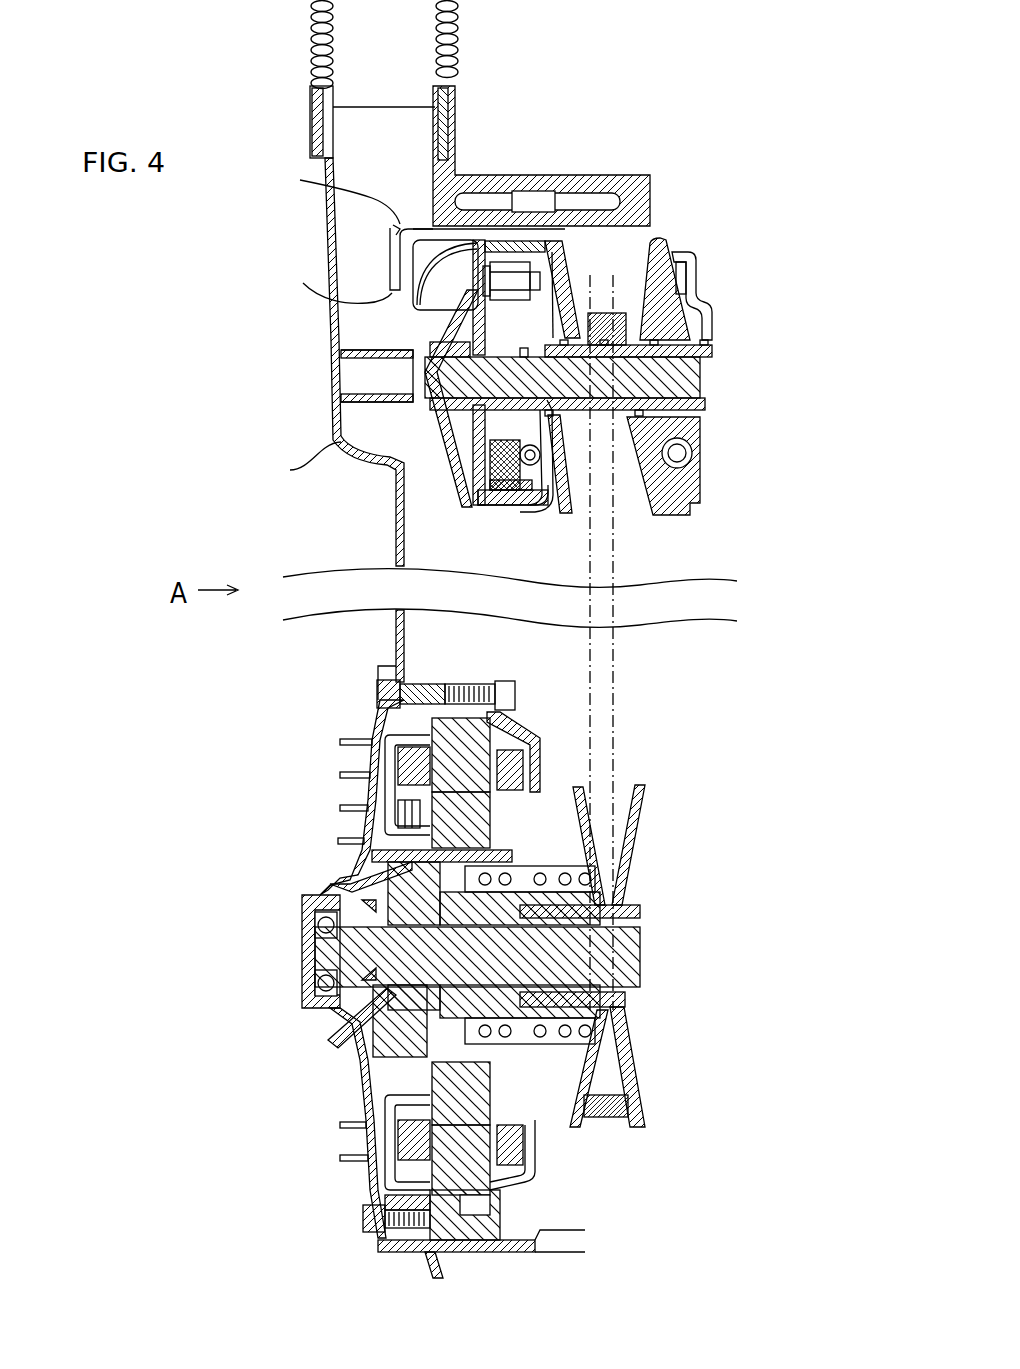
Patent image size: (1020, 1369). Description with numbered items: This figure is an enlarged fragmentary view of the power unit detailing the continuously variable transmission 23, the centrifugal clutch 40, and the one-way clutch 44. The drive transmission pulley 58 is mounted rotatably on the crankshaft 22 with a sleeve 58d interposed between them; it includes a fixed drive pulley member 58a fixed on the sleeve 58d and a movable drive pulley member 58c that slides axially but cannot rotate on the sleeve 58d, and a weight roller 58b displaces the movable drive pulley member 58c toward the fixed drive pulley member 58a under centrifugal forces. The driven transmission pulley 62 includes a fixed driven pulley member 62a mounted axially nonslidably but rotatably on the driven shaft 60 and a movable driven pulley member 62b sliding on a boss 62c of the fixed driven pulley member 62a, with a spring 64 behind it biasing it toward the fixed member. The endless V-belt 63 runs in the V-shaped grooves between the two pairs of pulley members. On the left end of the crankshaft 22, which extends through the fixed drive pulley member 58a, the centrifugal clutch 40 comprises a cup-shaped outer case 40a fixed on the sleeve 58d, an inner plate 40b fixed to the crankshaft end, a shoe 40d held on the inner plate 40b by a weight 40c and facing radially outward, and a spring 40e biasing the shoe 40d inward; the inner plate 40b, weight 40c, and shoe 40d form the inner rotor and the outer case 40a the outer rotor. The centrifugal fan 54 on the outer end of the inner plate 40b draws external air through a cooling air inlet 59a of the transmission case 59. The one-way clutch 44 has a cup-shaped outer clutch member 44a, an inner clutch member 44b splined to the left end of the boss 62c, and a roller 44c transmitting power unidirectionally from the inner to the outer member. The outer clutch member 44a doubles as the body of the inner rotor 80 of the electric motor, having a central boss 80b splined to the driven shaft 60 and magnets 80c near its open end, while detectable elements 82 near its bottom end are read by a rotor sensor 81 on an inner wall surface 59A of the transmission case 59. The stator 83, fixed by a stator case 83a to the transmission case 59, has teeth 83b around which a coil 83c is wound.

The centrifugal fan 54 is at (322, 184).
The transmission case 59 is at (330, 465).
The cooling air inlet 59a is at (390, 290).
The inner wall surface 59A is at (372, 735).
The centrifugal clutch 40 is at (511, 214).
The outer case 40a is at (556, 472).
The inner plate 40b is at (452, 432).
The weight 40c is at (490, 510).
The shoe 40d is at (515, 505).
The spring 40e is at (580, 460).
The drive transmission pulley 58 is at (671, 230).
The fixed drive pulley member 58a is at (568, 272).
The weight roller 58b is at (692, 468).
The movable drive pulley member 58c is at (670, 252).
The sleeve 58d is at (712, 360).
The crankshaft 22 is at (706, 396).
The continuously variable transmission 23 is at (636, 580).
The endless V-belt 63 is at (613, 655).
The driven transmission pulley 62 is at (660, 764).
The fixed driven pulley member 62a is at (645, 790).
The movable driven pulley member 62b is at (578, 787).
The boss 62c is at (612, 911).
The spring 64 is at (536, 866).
The driven shaft 60 is at (624, 957).
The rotor sensor 81 is at (375, 815).
The detectable elements 82 is at (378, 845).
The one-way clutch 44 is at (225, 857).
The outer clutch member 44a is at (395, 861).
The inner clutch member 44b is at (390, 913).
The roller 44c is at (395, 877).
The inner rotor 80 is at (350, 1007).
The central boss 80b is at (355, 1025).
The magnets 80c is at (492, 1090).
The stator 83 is at (418, 1215).
The stator case 83a is at (502, 1245).
The teeth 83b is at (452, 1262).
The coil 83c is at (522, 1156).